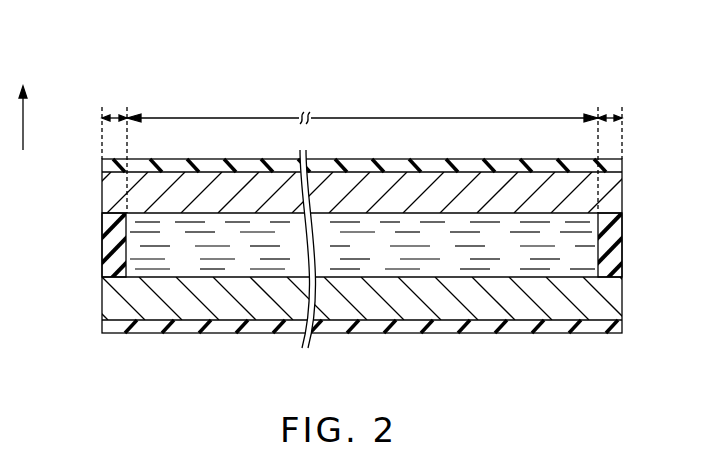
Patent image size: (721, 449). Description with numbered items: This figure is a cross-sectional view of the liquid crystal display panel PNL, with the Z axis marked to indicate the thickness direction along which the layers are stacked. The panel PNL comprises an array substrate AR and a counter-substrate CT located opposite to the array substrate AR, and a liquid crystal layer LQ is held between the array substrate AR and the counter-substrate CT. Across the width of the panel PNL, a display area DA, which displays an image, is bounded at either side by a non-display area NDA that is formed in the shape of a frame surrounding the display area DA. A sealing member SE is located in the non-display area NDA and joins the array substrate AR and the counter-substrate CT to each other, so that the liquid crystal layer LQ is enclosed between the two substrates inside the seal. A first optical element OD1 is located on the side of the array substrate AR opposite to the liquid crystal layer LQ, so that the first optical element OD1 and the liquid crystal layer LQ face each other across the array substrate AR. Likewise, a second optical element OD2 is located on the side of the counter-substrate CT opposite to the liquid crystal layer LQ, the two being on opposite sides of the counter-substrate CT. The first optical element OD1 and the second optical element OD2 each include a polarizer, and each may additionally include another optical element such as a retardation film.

The liquid crystal display panel PNL is at (112, 66).
The non-display area NDA is at (362, 104).
The display area DA is at (362, 110).
The Z direction Z is at (23, 108).
The counter-substrate CT is at (92, 194).
The sealing member SE is at (110, 250).
The array substrate AR is at (92, 305).
The liquid crystal layer LQ is at (182, 258).
The first optical element OD1 is at (606, 327).
The second optical element OD2 is at (606, 167).